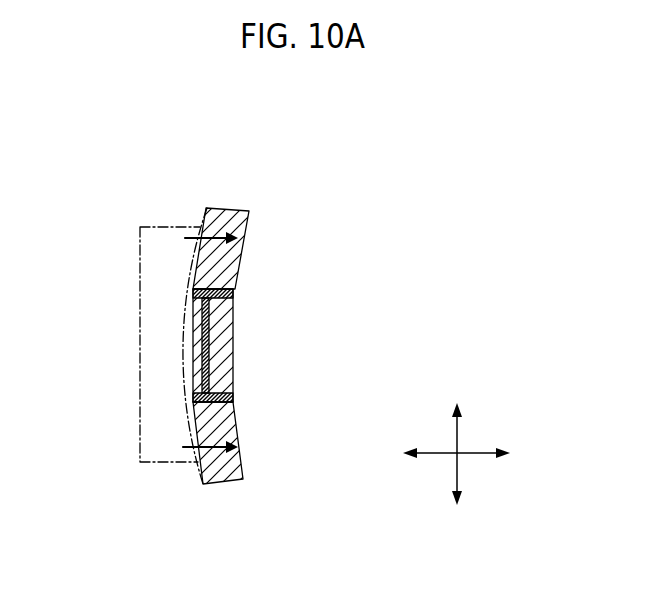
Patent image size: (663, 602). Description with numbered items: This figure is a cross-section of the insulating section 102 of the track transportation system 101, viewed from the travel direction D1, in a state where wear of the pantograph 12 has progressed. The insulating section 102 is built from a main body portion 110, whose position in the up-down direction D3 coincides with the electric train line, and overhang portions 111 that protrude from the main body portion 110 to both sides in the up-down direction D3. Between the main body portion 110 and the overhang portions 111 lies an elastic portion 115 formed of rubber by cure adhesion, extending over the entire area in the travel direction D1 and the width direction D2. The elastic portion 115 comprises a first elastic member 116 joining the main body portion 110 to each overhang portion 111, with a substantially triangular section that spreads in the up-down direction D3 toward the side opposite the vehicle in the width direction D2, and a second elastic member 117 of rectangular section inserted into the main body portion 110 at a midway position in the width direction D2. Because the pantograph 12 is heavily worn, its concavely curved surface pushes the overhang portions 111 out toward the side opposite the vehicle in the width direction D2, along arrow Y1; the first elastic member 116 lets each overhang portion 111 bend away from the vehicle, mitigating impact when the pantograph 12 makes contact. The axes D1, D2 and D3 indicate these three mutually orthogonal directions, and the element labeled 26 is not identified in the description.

The pantograph 12 is at (166, 246).
The lens holding member 26 is at (220, 212).
The track transportation system 101 is at (264, 154).
The insulating section 102 is at (262, 225).
The main body portion 110 is at (196, 320).
The overhang portions 111 is at (232, 262).
The elastic portion 115 is at (313, 283).
The first elastic member 116 is at (224, 297).
The second elastic member 117 is at (205, 340).
The arrow Y1 is at (193, 240).
The travel direction D1 is at (458, 452).
The width direction D2 is at (438, 453).
The up-down direction D3 is at (458, 468).